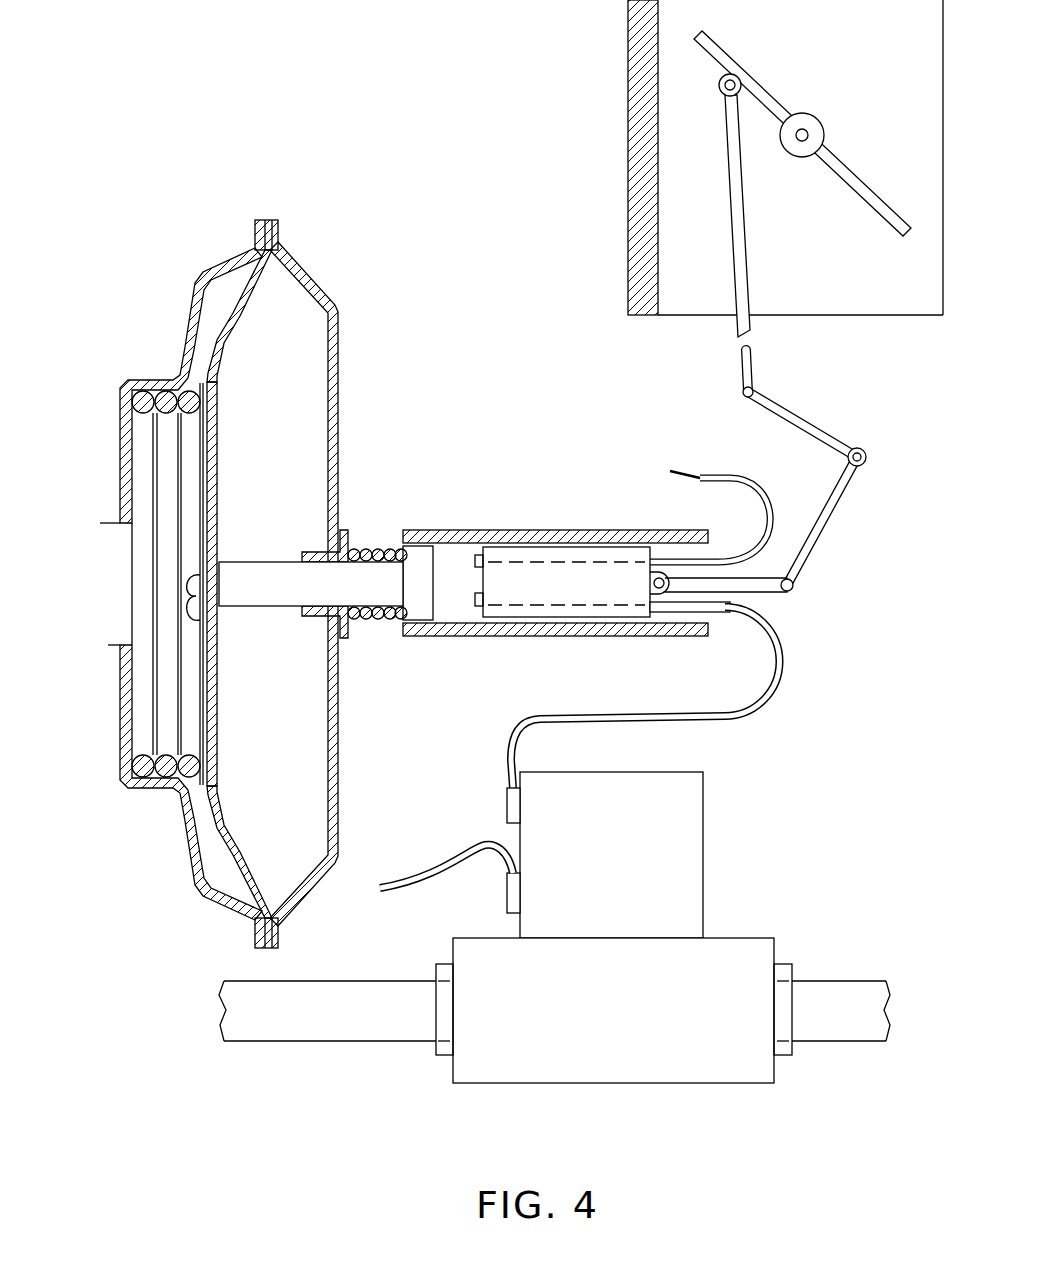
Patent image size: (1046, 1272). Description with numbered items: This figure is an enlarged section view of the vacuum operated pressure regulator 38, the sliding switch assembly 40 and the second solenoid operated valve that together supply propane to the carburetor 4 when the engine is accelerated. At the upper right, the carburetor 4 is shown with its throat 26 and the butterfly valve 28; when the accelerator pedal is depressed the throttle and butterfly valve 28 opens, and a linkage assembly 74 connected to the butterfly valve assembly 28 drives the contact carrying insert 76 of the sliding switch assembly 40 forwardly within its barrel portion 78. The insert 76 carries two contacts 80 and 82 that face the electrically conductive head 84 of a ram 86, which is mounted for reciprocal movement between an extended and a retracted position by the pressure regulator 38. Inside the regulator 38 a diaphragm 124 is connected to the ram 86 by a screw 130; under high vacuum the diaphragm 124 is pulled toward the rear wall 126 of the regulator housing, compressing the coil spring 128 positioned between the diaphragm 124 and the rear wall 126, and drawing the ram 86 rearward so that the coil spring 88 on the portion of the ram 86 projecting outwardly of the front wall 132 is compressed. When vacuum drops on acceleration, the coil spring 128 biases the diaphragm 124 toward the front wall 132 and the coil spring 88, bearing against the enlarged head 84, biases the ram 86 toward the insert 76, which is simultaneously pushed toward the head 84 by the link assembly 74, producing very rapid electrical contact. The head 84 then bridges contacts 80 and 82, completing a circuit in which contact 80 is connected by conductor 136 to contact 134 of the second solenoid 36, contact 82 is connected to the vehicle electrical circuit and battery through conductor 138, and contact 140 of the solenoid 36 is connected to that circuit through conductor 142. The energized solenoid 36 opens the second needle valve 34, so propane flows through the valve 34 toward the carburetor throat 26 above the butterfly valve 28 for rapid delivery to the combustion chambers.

The carburetor 4 is at (628, 118).
The throat 26 is at (670, 180).
The butterfly valve 28 is at (860, 202).
The linkage assembly 74 is at (811, 420).
The conductor 138 is at (728, 474).
The sliding switch assembly 40 is at (613, 530).
The barrel portion 78 is at (513, 636).
The electrically conductive head 84 is at (440, 612).
The contact carrying insert 76 is at (597, 600).
The contact 82 is at (473, 552).
The contact 80 is at (477, 593).
The pressure regulator 38 is at (337, 350).
The rear wall 126 is at (192, 292).
The front wall 132 is at (340, 762).
The diaphragm 124 is at (240, 318).
The coil spring 128 is at (193, 470).
The screw 130 is at (200, 602).
The ram 86 is at (289, 597).
The coil spring 88 is at (377, 549).
The conductor 136 is at (784, 662).
The second solenoid 36 is at (704, 875).
The contact 134 is at (507, 804).
The contact 140 is at (507, 895).
The conductor 142 is at (441, 870).
The second needle valve 34 is at (642, 1085).